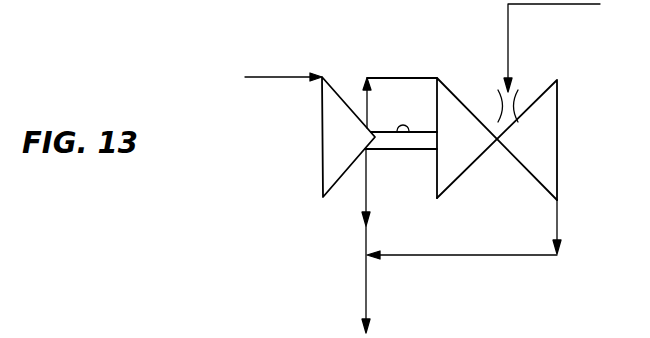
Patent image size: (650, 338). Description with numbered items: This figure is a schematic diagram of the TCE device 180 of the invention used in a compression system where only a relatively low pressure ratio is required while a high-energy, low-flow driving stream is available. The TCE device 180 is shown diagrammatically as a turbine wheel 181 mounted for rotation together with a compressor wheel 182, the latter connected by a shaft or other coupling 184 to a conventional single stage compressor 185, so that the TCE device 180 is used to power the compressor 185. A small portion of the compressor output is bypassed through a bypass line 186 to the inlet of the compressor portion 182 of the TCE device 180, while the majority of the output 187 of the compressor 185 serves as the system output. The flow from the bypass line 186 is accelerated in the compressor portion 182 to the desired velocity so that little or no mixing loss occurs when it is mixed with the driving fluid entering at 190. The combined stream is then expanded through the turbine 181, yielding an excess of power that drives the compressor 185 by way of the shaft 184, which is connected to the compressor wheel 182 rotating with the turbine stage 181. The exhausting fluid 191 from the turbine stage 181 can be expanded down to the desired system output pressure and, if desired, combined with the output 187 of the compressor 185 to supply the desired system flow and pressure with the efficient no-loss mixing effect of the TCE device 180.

The TCE device 180 is at (530, 119).
The turbine wheel 181 is at (572, 93).
The compressor wheel 182 is at (452, 97).
The shaft 184 is at (408, 134).
The compressor 185 is at (323, 150).
The bypass line 186 is at (392, 78).
The output 187 is at (364, 206).
The driving fluid inlet 190 is at (508, 33).
The exhausting fluid 191 is at (498, 238).